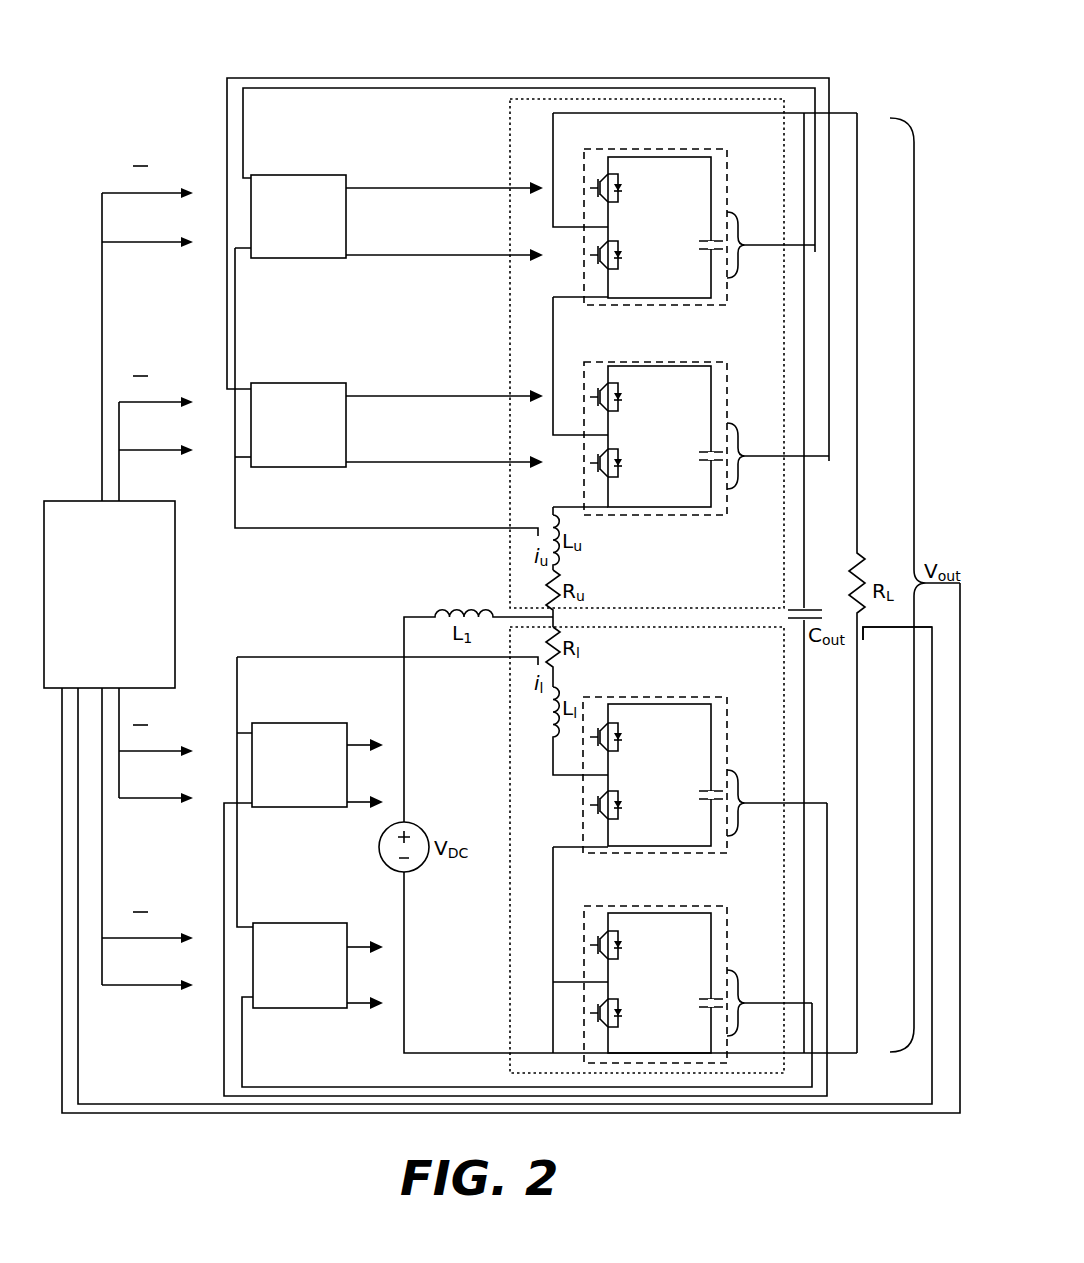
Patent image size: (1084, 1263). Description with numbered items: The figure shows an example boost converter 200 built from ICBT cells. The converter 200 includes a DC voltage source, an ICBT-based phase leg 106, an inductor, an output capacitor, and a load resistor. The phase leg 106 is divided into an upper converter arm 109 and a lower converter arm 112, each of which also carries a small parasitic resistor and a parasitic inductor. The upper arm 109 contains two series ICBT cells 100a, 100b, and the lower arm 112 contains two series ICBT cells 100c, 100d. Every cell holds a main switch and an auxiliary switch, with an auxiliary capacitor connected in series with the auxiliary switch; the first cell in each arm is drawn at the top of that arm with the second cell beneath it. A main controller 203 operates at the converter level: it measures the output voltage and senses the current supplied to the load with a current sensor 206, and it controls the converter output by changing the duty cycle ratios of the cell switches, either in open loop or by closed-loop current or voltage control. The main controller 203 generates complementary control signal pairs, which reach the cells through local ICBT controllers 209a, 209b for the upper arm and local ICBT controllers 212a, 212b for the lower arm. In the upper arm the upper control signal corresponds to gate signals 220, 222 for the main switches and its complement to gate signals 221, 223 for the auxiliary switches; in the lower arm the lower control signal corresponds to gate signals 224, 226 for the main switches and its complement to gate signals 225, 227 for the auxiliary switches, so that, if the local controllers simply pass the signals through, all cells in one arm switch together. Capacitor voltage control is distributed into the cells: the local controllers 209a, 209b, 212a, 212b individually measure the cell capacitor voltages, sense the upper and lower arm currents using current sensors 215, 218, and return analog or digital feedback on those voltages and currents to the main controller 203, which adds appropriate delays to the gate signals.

The boost converter 200 is at (378, 66).
The ICBT-based phase leg 106 is at (652, 66).
The converter arm 109 is at (506, 152).
The converter arm 112 is at (507, 727).
The main controller 203 is at (502, 639).
The local ICBT controller 209a is at (525, 173).
The local ICBT controller 209b is at (290, 425).
The local ICBT controller 212a is at (525, 909).
The local ICBT controller 212b is at (527, 1005).
The current sensor 215 is at (492, 535).
The current sensor 218 is at (492, 662).
The gate signal 220 is at (356, 264).
The gate signal 221 is at (356, 182).
The gate signal 222 is at (356, 472).
The gate signal 223 is at (356, 390).
The gate signal 224 is at (356, 811).
The gate signal 225 is at (356, 735).
The gate signal 226 is at (356, 1012).
The gate signal 227 is at (356, 937).
The current sensor 206 is at (906, 628).
The ICBT cell 100a is at (658, 149).
The ICBT cell 100b is at (658, 362).
The ICBT cell 100c is at (658, 697).
The ICBT cell 100d is at (658, 906).